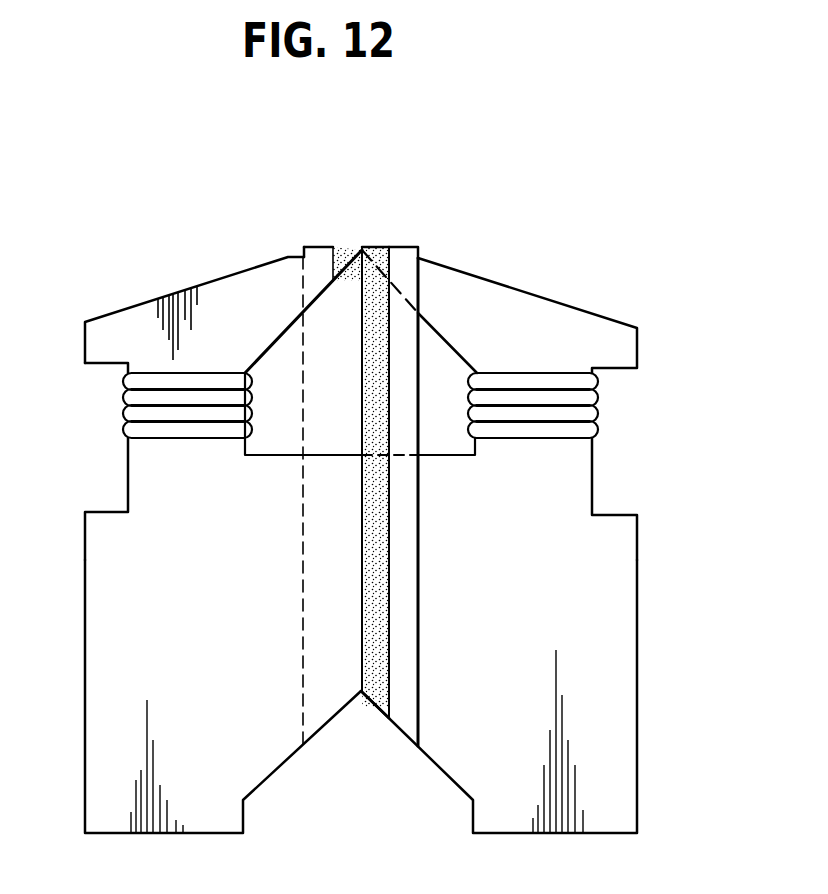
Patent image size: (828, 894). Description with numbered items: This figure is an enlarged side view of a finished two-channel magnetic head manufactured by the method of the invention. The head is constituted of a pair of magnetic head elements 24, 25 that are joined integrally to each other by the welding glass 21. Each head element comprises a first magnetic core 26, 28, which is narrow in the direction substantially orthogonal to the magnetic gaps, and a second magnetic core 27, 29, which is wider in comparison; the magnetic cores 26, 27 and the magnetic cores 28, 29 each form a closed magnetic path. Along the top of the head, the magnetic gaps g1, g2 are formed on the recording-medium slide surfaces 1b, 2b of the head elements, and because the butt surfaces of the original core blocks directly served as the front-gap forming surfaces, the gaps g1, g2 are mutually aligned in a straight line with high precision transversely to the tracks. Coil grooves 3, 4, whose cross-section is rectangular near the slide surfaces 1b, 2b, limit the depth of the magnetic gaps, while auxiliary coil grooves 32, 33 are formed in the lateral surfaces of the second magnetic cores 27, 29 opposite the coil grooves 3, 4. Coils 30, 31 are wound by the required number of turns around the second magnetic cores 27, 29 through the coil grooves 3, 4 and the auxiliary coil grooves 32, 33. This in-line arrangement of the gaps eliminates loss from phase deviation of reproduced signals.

The magnetic head element 25 is at (172, 262).
The magnetic head element 24 is at (563, 287).
The first magnetic core 26 is at (327, 340).
The first magnetic core 28 is at (413, 337).
The recording-medium slide surface 2b is at (318, 245).
The recording-medium slide surface 1b is at (405, 245).
The magnetic gap g1 is at (362, 247).
The magnetic gap g2 is at (375, 482).
The coil 31 is at (123, 405).
The coil 30 is at (598, 410).
The auxiliary coil groove 33 is at (107, 510).
The auxiliary coil groove 32 is at (615, 515).
The second magnetic core 29 is at (97, 660).
The second magnetic core 27 is at (630, 687).
The coil groove 4 is at (280, 455).
The coil groove 3 is at (448, 456).
The welding glass 21 is at (361, 652).